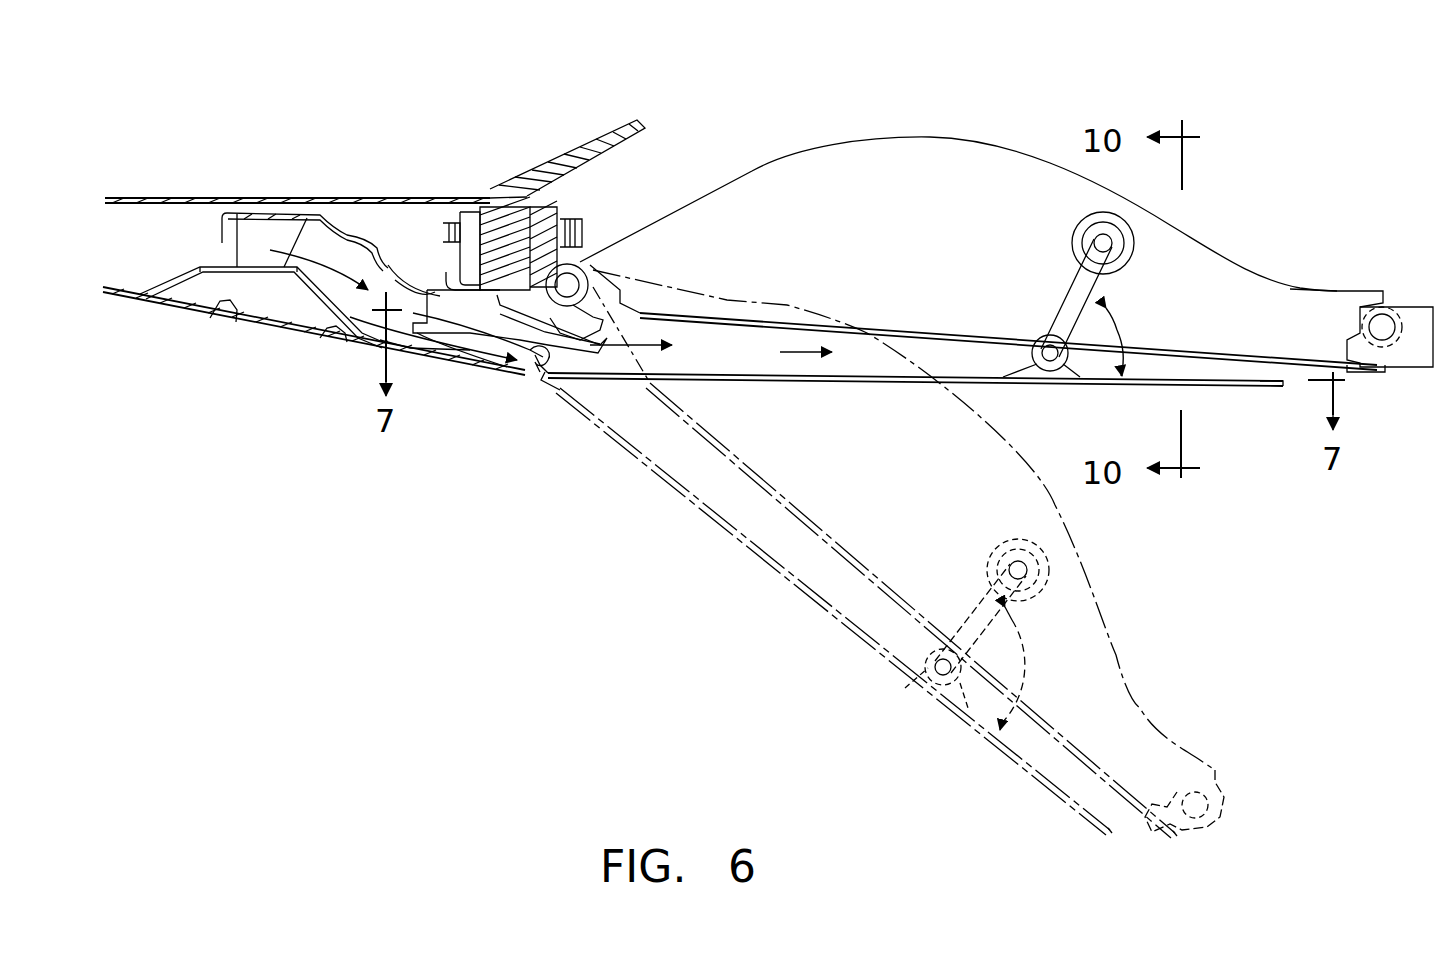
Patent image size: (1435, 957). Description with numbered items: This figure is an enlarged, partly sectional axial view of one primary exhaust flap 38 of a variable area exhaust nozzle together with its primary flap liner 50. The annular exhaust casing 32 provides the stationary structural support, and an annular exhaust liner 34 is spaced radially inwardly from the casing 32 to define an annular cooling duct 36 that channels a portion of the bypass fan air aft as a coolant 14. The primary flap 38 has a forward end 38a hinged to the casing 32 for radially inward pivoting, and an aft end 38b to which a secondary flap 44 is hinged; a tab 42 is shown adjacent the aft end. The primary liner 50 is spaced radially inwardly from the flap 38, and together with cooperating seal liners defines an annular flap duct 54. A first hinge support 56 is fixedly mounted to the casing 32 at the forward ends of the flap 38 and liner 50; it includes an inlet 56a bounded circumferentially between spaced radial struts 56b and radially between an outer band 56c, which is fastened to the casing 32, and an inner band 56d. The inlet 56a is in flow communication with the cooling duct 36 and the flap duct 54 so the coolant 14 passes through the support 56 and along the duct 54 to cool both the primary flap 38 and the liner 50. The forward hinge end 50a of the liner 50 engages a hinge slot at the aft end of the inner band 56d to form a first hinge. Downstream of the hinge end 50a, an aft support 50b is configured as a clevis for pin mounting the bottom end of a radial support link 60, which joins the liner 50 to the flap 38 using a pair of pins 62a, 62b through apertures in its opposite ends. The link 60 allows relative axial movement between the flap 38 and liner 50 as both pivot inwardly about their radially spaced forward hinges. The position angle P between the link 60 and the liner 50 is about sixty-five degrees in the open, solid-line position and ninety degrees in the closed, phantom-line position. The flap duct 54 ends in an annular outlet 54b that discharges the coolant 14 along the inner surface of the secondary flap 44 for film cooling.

The coolant 14 is at (316, 255).
The exhaust casing 32 is at (488, 183).
The exhaust liner 34 is at (152, 303).
The cooling duct 36 is at (150, 250).
The primary exhaust flap 38 is at (960, 147).
The forward end of primary flap 38a is at (574, 270).
The aft end of primary flap 38b is at (1337, 290).
The latch tab 42 is at (1377, 367).
The secondary flap 44 is at (1423, 307).
The primary flap liner 50 is at (760, 373).
The forward hinge end of primary liner 50a is at (540, 373).
The aft support of primary liner 50b is at (1013, 367).
The flap duct 54 is at (735, 362).
The flap duct outlet 54b is at (1287, 377).
The first hinge support 56 is at (418, 255).
The inlet 56a is at (438, 313).
The radial strut 56b is at (370, 338).
The outer band 56c is at (441, 292).
The inner band 56d is at (512, 332).
The support link 60 is at (1100, 277).
The pin 62a is at (1100, 243).
The pin 62b is at (1050, 347).
The position angle P is at (1117, 327).